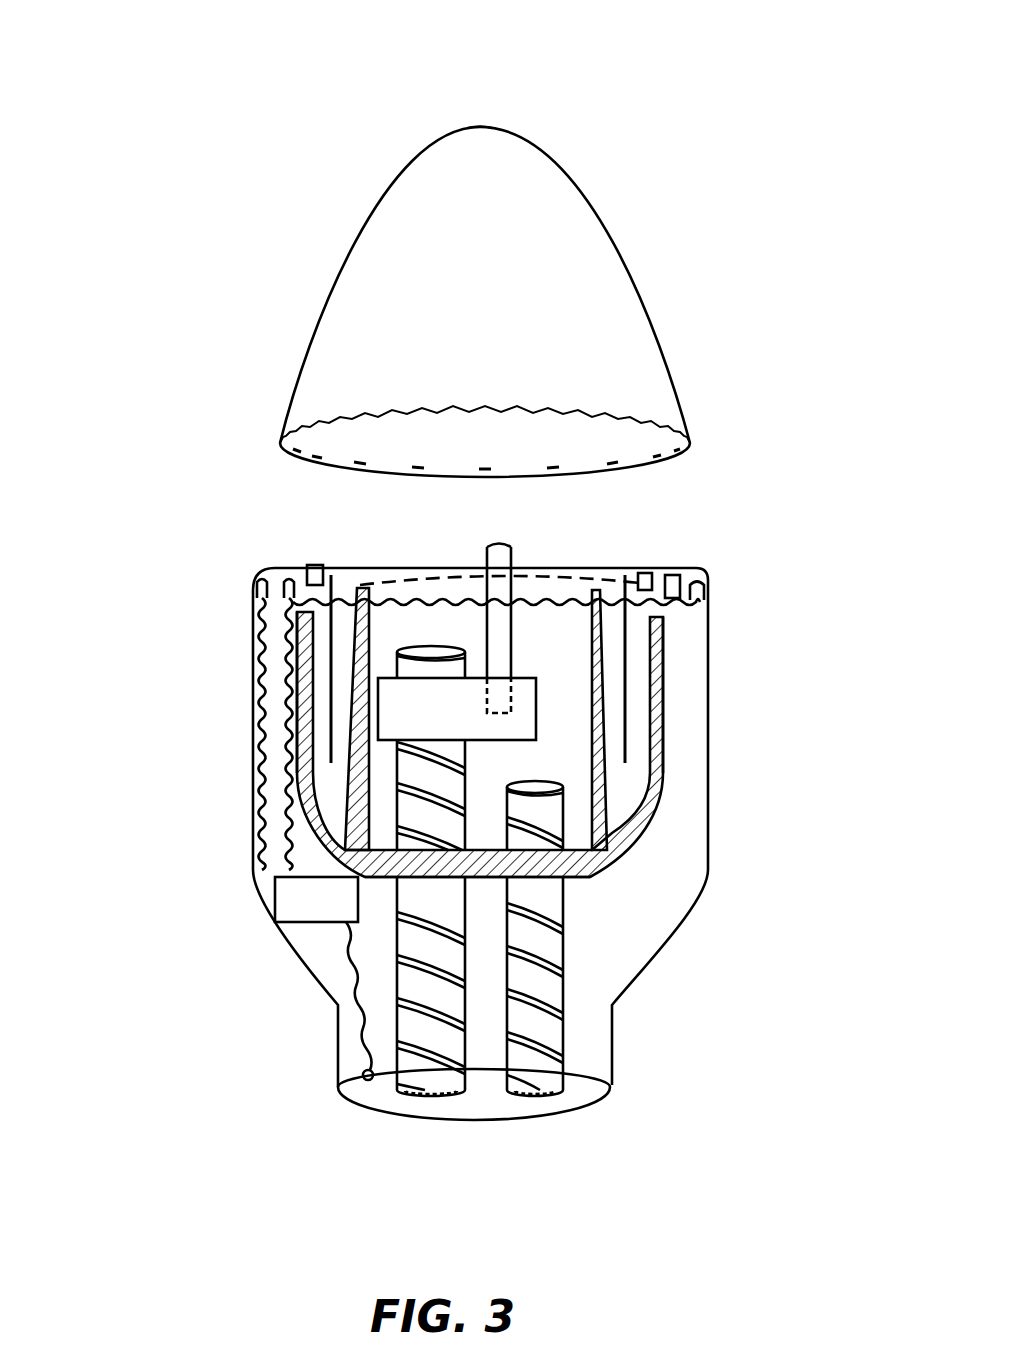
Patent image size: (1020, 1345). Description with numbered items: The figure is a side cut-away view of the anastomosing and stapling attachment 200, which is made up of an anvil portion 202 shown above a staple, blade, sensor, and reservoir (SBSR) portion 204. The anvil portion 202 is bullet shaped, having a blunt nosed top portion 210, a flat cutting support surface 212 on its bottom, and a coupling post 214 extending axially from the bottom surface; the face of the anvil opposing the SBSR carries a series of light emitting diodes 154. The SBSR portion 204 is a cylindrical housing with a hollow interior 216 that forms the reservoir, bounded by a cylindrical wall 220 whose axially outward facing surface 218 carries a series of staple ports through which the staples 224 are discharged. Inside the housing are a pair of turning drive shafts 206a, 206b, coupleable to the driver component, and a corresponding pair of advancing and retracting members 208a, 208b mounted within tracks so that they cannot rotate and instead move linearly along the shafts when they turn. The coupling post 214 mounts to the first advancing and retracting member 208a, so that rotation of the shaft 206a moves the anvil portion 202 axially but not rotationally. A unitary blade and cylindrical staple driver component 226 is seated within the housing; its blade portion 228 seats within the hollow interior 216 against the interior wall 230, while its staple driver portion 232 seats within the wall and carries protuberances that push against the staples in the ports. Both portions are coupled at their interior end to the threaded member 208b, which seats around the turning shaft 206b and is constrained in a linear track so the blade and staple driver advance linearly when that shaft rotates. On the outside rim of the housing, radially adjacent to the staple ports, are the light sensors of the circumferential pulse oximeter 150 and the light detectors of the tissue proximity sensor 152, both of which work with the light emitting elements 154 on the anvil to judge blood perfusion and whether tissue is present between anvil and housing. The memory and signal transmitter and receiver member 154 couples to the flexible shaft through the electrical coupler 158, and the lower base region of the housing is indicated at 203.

The anastomosing and stapling attachment 200 is at (665, 261).
The anvil portion 202 is at (485, 302).
The blunt nosed top portion 210 is at (480, 127).
The flat cutting support surface 212 is at (330, 413).
The light emitting diodes / memory and signal transmitter and receiver member 154 is at (274, 900).
The pulse oximeter 150 is at (308, 575).
The tissue proximity sensor 152 is at (258, 585).
The axially outward facing surface 218 is at (613, 566).
The staples 224 is at (648, 572).
The coupling post 214 is at (512, 634).
The staple driver portion 232 is at (292, 640).
The blade portion 228 is at (302, 672).
The interior wall 230 is at (325, 730).
The unitary blade and cylindrical staple driver component 226 is at (307, 850).
The cylindrical wall 220 is at (662, 708).
The hollow interior 216 is at (568, 762).
The staple, blade, sensor, and reservoir (SBSR) portion 204 is at (710, 870).
The first advancing and retracting member 208a is at (480, 732).
The threaded member 208b is at (578, 880).
The turning drive shaft 206a is at (396, 1048).
The turning drive shaft 206b is at (568, 1020).
The electrical coupler 158 is at (363, 1073).
The base 203 is at (378, 1098).